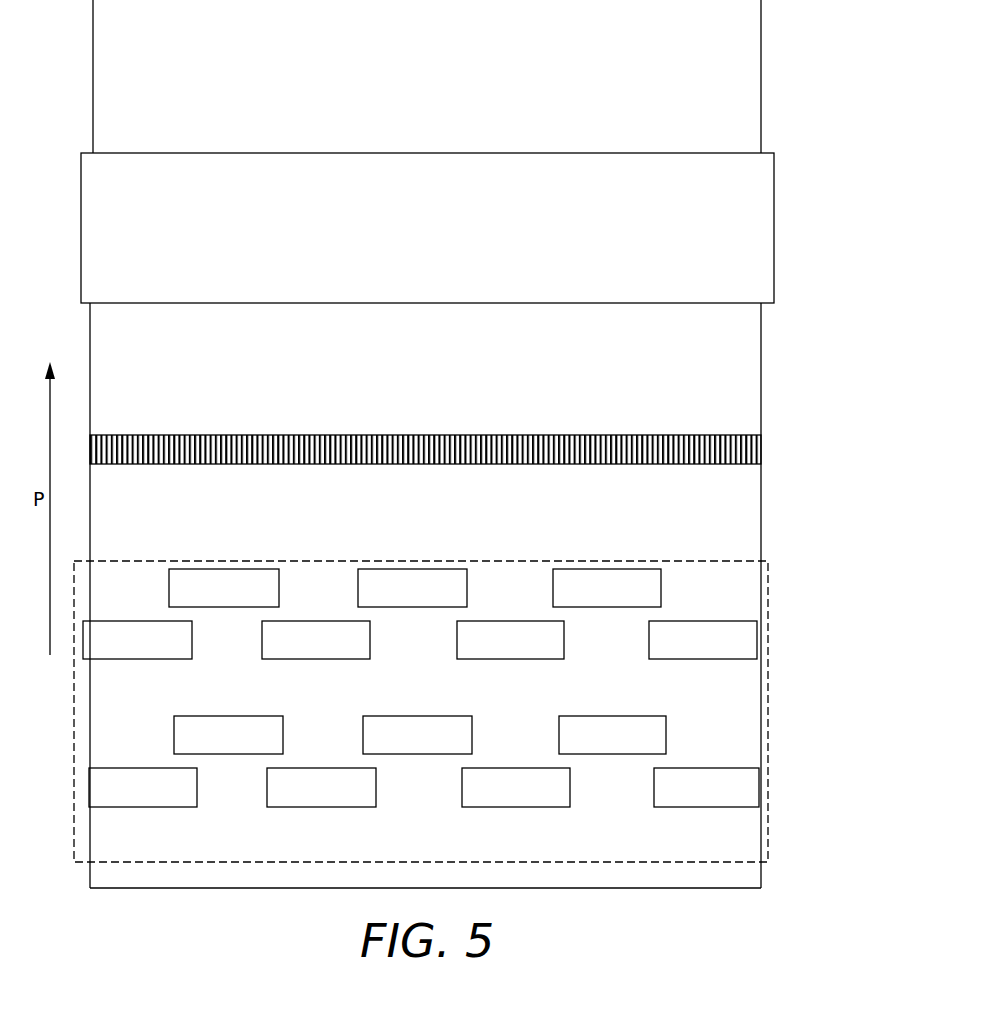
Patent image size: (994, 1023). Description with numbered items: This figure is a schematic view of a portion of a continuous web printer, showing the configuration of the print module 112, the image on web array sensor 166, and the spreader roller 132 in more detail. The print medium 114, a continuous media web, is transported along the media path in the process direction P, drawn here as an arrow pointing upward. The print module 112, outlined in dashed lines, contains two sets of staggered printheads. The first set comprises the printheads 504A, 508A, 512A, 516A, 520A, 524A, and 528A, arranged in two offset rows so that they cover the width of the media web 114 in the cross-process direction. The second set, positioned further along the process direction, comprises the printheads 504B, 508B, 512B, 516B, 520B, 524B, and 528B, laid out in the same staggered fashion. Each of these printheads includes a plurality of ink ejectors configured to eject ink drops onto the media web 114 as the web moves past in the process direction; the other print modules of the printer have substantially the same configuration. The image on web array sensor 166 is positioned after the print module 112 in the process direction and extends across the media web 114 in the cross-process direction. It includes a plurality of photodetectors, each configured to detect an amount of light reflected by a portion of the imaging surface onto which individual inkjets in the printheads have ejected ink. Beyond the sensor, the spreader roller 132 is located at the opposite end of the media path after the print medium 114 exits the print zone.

The print module 112 is at (74, 748).
The print medium 114 is at (761, 396).
The spreader 132 is at (81, 241).
The image on web array sensor 166 is at (628, 465).
The printhead 504A is at (138, 660).
The printhead 508A is at (222, 608).
The printhead 512A is at (312, 660).
The printhead 516A is at (407, 608).
The printhead 520A is at (508, 660).
The printhead 524A is at (606, 608).
The printhead 528A is at (700, 660).
The printhead 504B is at (140, 808).
The printhead 508B is at (228, 755).
The printhead 512B is at (317, 808).
The printhead 516B is at (412, 755).
The printhead 520B is at (514, 808).
The printhead 524B is at (612, 755).
The printhead 528B is at (705, 808).